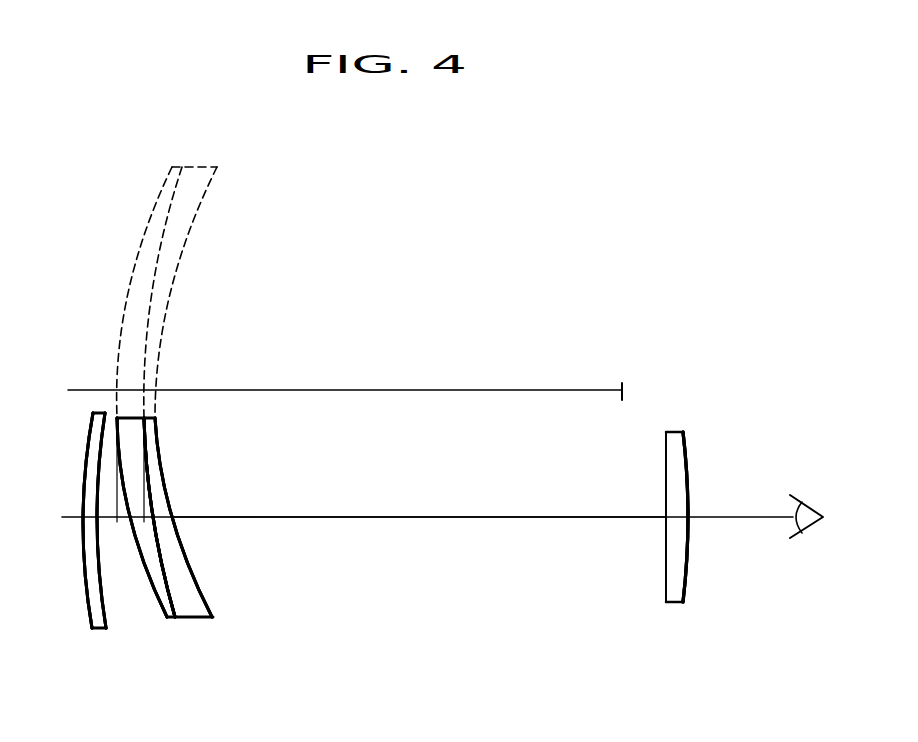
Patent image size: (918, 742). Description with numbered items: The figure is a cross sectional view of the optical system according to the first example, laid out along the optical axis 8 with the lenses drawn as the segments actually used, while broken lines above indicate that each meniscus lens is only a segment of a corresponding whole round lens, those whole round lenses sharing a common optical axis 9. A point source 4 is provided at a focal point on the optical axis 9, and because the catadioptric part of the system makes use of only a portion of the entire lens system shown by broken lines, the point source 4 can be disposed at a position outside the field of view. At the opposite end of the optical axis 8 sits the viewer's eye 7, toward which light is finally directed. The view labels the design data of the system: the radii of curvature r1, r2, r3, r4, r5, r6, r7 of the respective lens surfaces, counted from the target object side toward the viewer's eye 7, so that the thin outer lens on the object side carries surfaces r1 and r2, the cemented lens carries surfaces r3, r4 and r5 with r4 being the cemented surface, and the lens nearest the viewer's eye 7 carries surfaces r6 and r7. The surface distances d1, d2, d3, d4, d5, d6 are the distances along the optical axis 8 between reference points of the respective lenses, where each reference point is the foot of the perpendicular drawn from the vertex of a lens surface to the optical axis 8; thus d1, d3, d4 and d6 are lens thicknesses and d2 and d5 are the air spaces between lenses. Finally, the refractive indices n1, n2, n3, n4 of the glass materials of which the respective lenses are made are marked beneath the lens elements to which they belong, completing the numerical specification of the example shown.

The point source 4 is at (623, 388).
The viewer's eye 7 is at (815, 527).
The optical axis 8 is at (63, 524).
The common optical axis 9 is at (268, 389).
The surface distance d1 is at (90, 509).
The surface distance d2 is at (109, 510).
The surface distance d3 is at (138, 512).
The surface distance d4 is at (154, 507).
The surface distance d5 is at (410, 515).
The surface distance d6 is at (671, 511).
The radius of curvature r1 is at (83, 575).
The radius of curvature r2 is at (104, 584).
The radius of curvature r3 is at (133, 528).
The radius of curvature r4 is at (163, 560).
The radius of curvature r5 is at (203, 590).
The radius of curvature r6 is at (665, 541).
The radius of curvature r7 is at (688, 548).
The refractive index n1 is at (95, 631).
The refractive index n2 is at (164, 619).
The refractive index n3 is at (198, 610).
The refractive index n4 is at (670, 604).